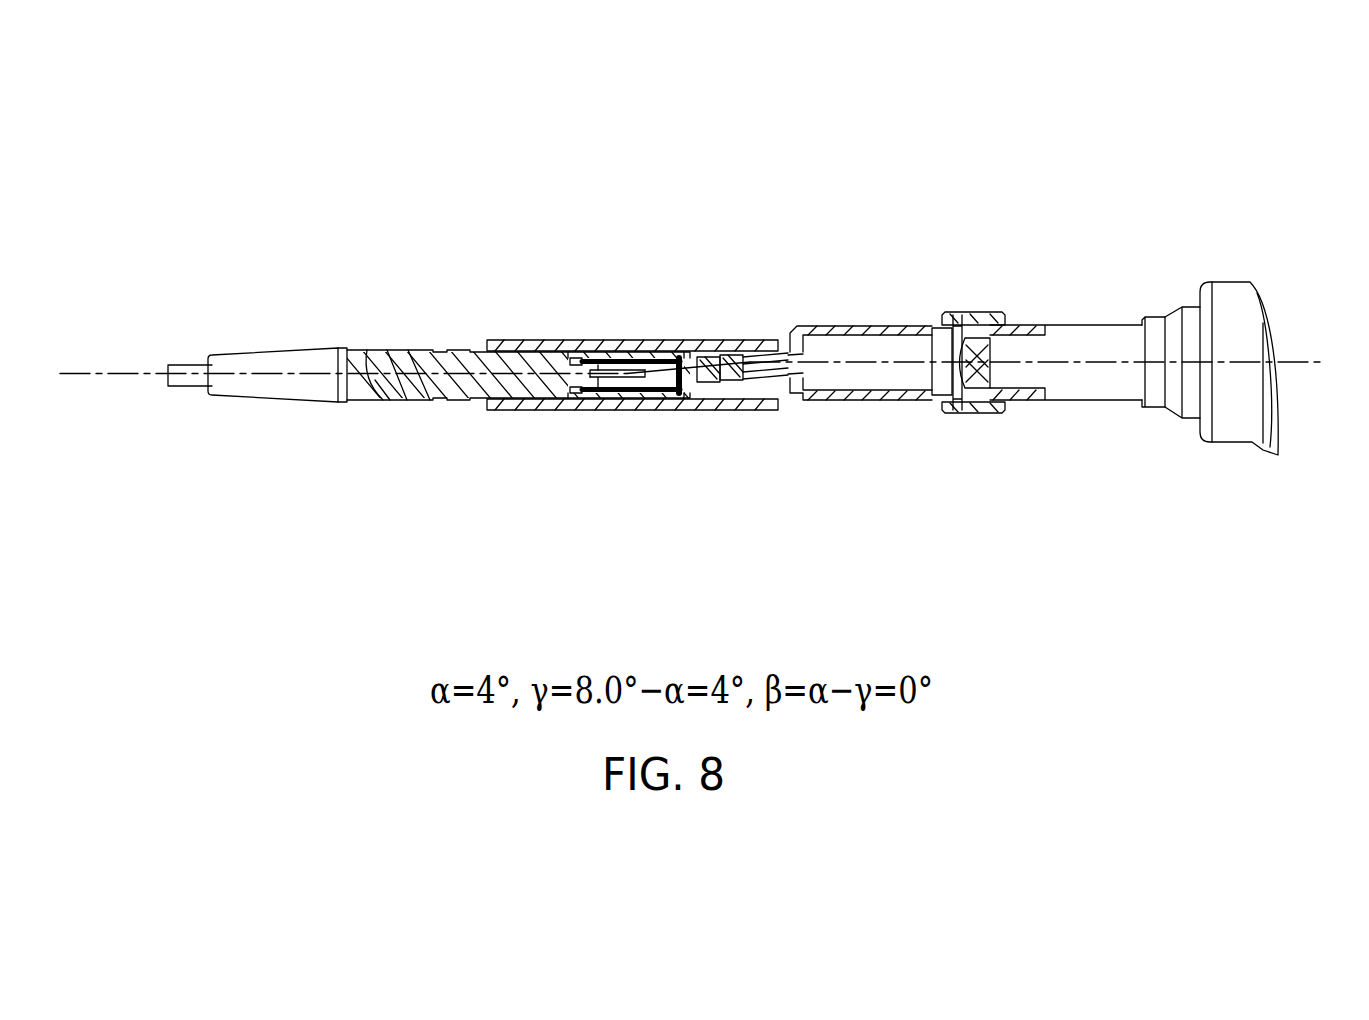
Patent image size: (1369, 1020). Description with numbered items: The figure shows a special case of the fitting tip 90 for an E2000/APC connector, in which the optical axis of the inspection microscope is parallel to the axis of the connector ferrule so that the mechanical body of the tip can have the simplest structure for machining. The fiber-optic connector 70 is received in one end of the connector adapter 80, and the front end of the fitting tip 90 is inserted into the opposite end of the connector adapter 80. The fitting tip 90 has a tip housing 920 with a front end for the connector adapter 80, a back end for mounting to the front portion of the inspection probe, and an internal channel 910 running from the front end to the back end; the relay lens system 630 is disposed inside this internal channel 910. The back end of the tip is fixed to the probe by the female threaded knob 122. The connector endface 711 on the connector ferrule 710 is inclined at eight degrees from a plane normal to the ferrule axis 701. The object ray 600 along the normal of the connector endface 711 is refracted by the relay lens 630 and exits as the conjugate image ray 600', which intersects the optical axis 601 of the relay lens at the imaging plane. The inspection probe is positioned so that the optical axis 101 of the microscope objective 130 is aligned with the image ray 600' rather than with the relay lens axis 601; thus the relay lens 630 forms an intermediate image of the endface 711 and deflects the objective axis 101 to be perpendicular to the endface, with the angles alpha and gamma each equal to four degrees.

The fiber-optic connector 70 is at (387, 337).
The axis of the connector ferrule 701 is at (426, 375).
The connector adapter 80 is at (625, 338).
The object ray 600 is at (638, 271).
The relay lens system 630 is at (737, 355).
The conjugate image ray 600' is at (808, 274).
The optical axis of the relay lens 601 is at (790, 376).
The connector ferrule 710 is at (603, 377).
The connector endface 711 is at (652, 372).
The fitting tip 90 is at (833, 405).
The internal channel 910 is at (785, 397).
The tip housing 920 is at (875, 395).
The female threaded knob 122 is at (978, 412).
The optical axis of the microscope objective 101 is at (872, 340).
The microscope objective 130 is at (993, 317).